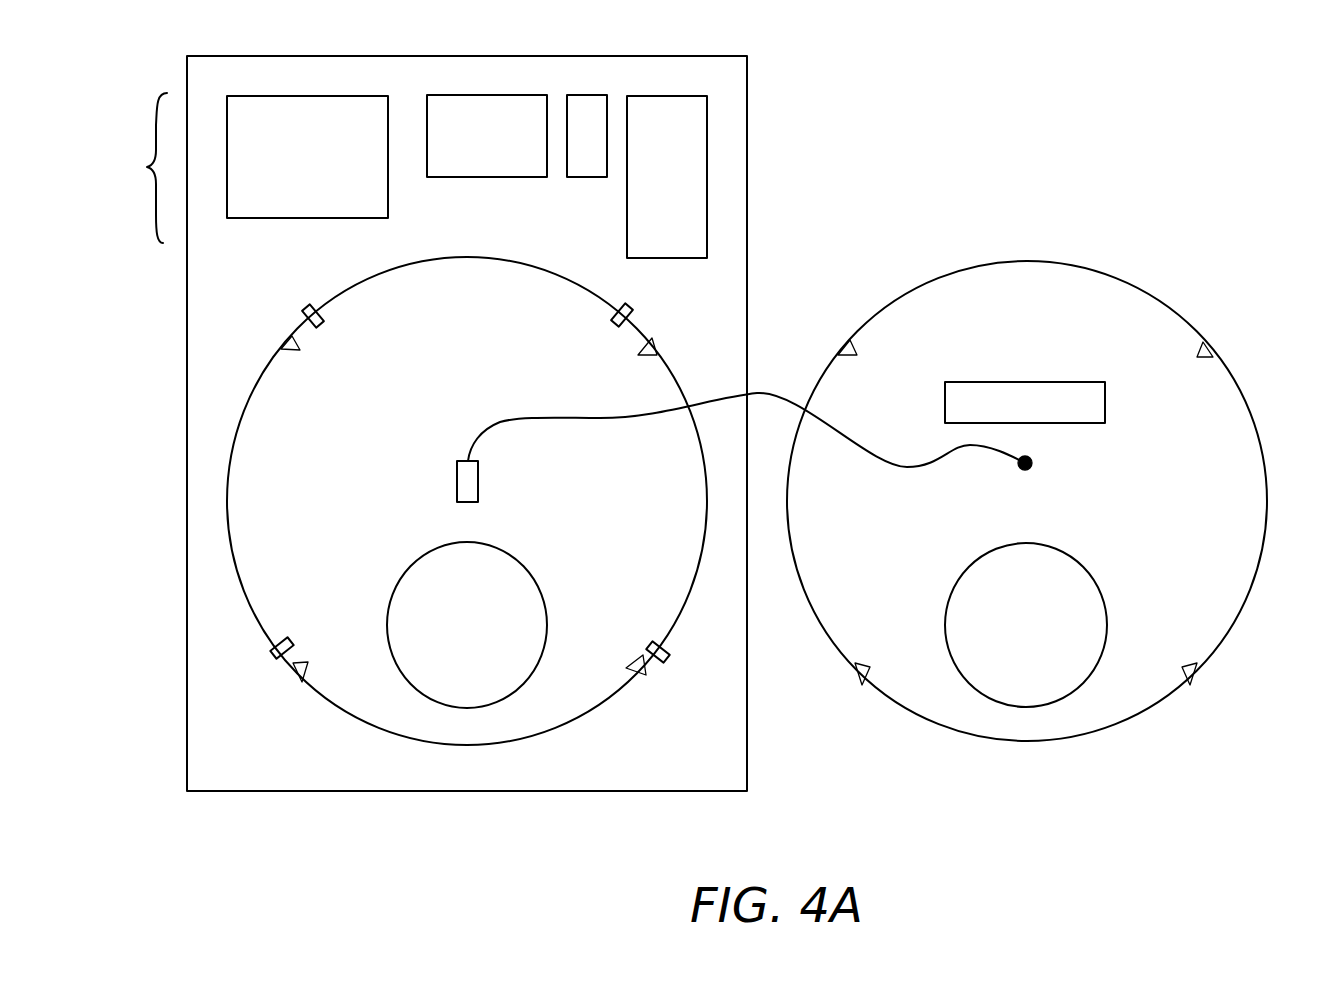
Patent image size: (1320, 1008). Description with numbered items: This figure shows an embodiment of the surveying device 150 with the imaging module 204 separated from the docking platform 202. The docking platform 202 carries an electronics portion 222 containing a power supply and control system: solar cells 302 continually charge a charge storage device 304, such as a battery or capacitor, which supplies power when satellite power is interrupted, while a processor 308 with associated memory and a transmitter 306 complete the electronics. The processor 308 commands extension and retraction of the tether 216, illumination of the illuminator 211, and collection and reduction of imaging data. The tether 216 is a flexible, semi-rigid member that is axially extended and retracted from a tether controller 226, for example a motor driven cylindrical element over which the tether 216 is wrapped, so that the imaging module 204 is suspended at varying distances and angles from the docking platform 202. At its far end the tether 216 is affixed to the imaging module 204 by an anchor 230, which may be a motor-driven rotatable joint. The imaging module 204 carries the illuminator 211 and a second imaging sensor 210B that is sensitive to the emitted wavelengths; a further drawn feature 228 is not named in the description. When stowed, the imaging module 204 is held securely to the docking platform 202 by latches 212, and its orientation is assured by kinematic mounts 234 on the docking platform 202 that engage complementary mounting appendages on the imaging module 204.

The surveying device 150 is at (1068, 165).
The electronics portion 222 is at (416, 423).
The solar cells 302 is at (300, 96).
The charge storage device 304 is at (460, 95).
The transmitter 306 is at (588, 95).
The processor 308 is at (707, 177).
The docking platform 202 is at (748, 300).
The imaging module 204 is at (1247, 410).
The latches 212 is at (311, 305).
The kinematic mounts 234 is at (280, 337).
The tether controller 226 is at (457, 480).
The tether 216 is at (757, 393).
The anchor 230 is at (1025, 463).
The illuminator 211 is at (1030, 382).
The opening 228 is at (543, 600).
The second imaging sensor 210B is at (1105, 643).